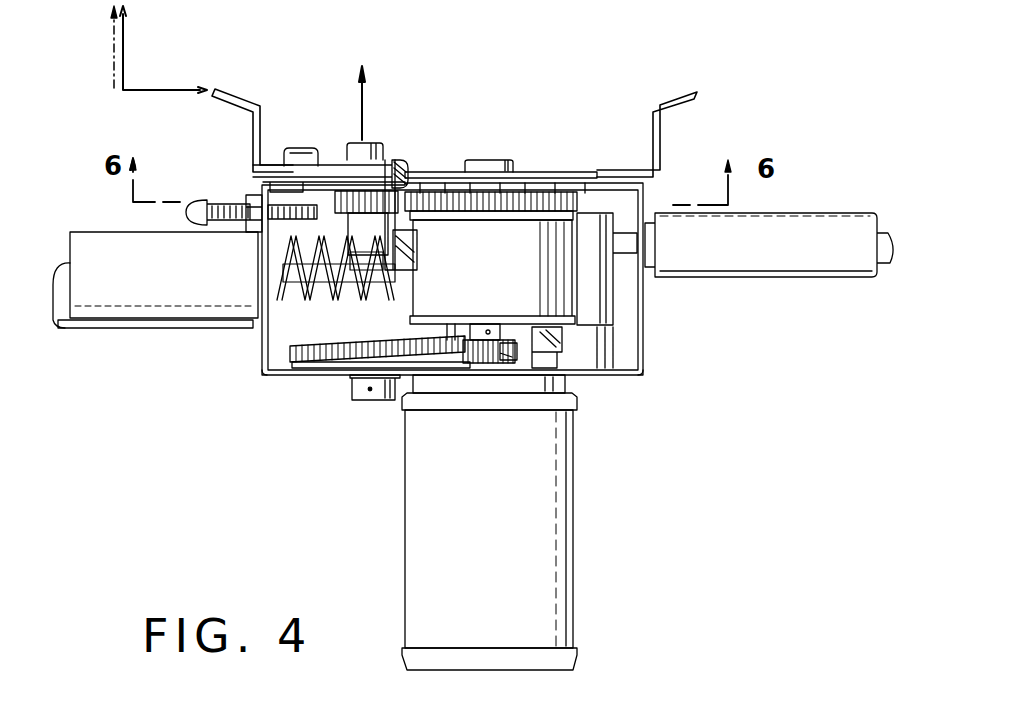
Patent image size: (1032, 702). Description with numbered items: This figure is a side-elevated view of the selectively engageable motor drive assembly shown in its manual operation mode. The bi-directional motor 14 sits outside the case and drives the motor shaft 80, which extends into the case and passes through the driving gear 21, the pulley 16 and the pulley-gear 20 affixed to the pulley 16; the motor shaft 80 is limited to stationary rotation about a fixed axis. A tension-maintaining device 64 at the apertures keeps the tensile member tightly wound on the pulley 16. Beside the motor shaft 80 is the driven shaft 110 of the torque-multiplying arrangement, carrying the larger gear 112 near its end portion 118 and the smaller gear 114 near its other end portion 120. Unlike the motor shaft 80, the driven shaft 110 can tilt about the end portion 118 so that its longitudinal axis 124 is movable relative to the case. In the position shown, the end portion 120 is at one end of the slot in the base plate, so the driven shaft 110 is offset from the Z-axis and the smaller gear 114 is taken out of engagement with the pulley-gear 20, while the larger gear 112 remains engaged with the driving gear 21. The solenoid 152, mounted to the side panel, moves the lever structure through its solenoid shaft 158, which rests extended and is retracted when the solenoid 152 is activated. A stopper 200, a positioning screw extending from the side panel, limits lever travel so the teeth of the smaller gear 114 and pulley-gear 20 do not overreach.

The bi-directional motor 14 is at (567, 485).
The pulley 16 is at (492, 280).
The pulley-gear 20 is at (513, 200).
The driving gear 21 is at (490, 360).
The tension-maintaining device 64 is at (115, 322).
The motor shaft 80 is at (490, 158).
The driven shaft 110 is at (380, 148).
The larger gear 112 is at (297, 362).
The smaller gear 114 is at (330, 182).
The end portion of the driven shaft 118 is at (355, 400).
The other end portion of the driven shaft 120 is at (352, 142).
The longitudinal axis 124 is at (112, 40).
The solenoid 152 is at (102, 237).
The solenoid shaft 158 is at (313, 283).
The stopper 200 is at (222, 200).